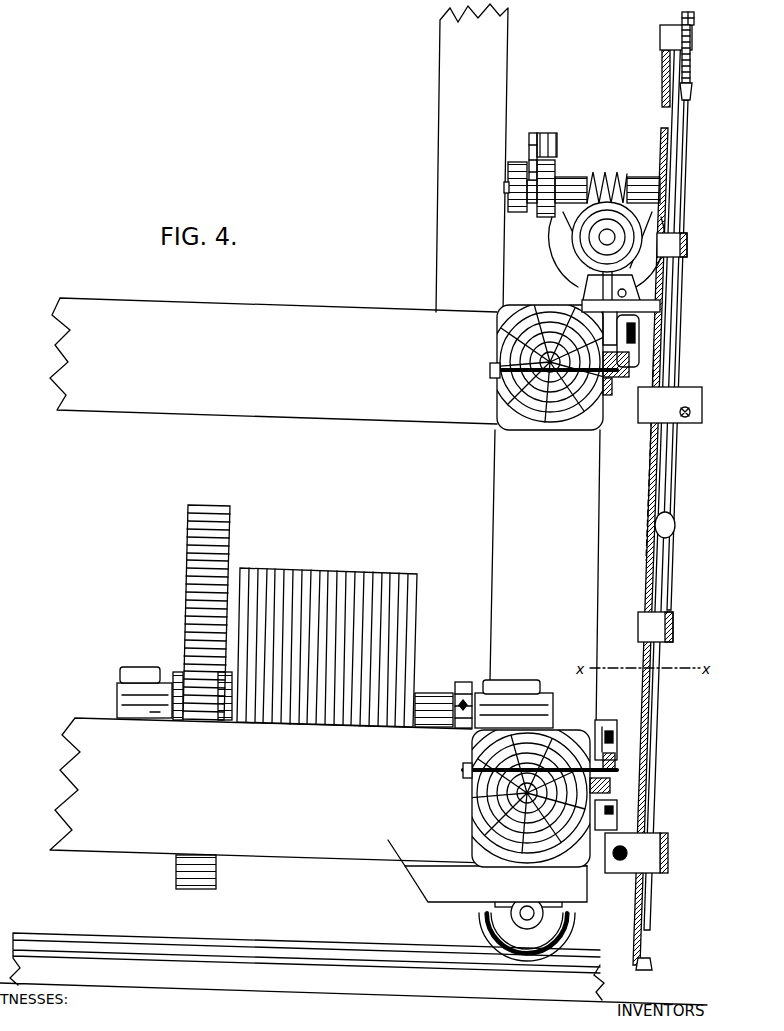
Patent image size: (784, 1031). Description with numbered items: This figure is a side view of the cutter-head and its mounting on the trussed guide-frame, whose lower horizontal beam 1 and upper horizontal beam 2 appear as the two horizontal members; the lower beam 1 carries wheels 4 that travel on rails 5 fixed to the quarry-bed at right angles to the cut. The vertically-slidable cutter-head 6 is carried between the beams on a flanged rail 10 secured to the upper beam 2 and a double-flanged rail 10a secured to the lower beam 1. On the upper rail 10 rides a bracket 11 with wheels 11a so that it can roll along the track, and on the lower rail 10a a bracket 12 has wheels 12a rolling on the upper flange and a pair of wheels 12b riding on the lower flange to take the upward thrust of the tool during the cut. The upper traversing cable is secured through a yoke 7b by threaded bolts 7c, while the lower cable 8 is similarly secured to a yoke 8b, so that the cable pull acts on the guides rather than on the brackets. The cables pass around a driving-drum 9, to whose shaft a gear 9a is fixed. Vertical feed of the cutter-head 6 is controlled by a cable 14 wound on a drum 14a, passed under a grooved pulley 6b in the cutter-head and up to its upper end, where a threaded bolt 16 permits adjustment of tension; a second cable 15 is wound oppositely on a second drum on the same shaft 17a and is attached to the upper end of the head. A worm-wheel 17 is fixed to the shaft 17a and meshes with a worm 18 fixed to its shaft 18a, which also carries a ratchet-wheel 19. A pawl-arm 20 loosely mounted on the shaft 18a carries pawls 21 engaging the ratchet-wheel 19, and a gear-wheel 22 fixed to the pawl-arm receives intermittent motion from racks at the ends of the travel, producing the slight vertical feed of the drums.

The lower horizontal beam 1 is at (452, 846).
The upper horizontal beam 2 is at (598, 405).
The wheels 4 is at (478, 921).
The rails 5 is at (300, 941).
The cutter-head 6 is at (650, 498).
The grooved pulley 6b is at (671, 535).
The yoke 7b is at (697, 423).
The threaded bolts 7c is at (690, 410).
The lower cable 8 is at (618, 860).
The yoke 8b is at (669, 871).
The driving-drum 9 is at (307, 578).
The gear 9a is at (232, 519).
The flanged rail 10 is at (630, 362).
The double-flanged rail 10a is at (612, 766).
The bracket 11 is at (646, 312).
The wheels 11a is at (639, 335).
The bracket 12 is at (618, 735).
The wheels 12a is at (614, 742).
The wheels 12b is at (614, 812).
The cable 14 is at (688, 140).
The drum 14a is at (562, 243).
The second cable 15 is at (662, 90).
The threaded bolt 16 is at (689, 62).
The worm-wheel 17 is at (641, 228).
The shaft 17a is at (616, 237).
The worm 18 is at (604, 176).
The shaft 18a is at (505, 190).
The ratchet-wheel 19 is at (556, 168).
The pawl-arm 20 is at (531, 150).
The pawls 21 is at (546, 135).
The gear-wheel 22 is at (510, 206).